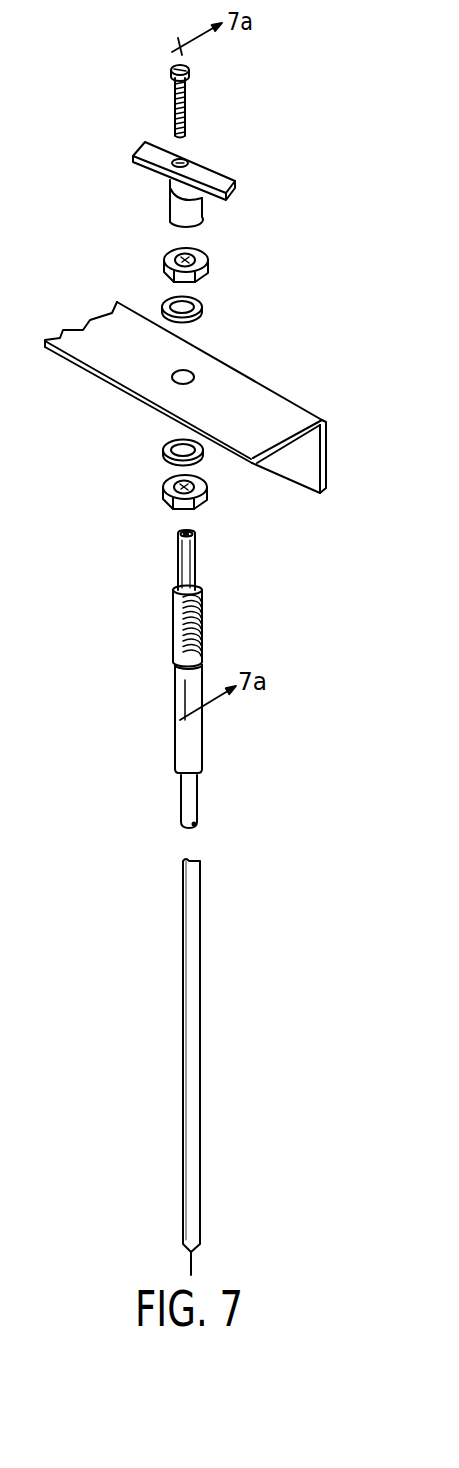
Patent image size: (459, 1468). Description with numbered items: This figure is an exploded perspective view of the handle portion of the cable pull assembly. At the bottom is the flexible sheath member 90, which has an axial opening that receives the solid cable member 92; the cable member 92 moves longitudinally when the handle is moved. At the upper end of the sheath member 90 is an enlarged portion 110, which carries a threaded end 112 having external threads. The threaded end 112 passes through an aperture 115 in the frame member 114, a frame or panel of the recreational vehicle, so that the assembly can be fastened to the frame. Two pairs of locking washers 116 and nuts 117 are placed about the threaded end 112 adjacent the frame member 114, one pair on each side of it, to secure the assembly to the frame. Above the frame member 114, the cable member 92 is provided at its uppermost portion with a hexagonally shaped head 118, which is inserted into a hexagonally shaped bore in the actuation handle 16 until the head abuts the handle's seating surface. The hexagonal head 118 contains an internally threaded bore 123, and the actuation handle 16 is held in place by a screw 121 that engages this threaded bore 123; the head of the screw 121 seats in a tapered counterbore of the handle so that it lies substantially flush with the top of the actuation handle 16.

The screw 121 is at (186, 97).
The actuation handle 16 is at (212, 180).
The nut 117 is at (206, 255).
The locking washer 116 is at (204, 308).
The aperture 115 is at (194, 372).
The frame member 114 is at (272, 413).
The internally threaded bore 123 is at (193, 529).
The hexagonally shaped head 118 is at (188, 568).
The threaded end 112 is at (182, 622).
The enlarged portion 110 is at (192, 750).
The sheath member 90 is at (192, 973).
The cable member 92 is at (193, 1260).